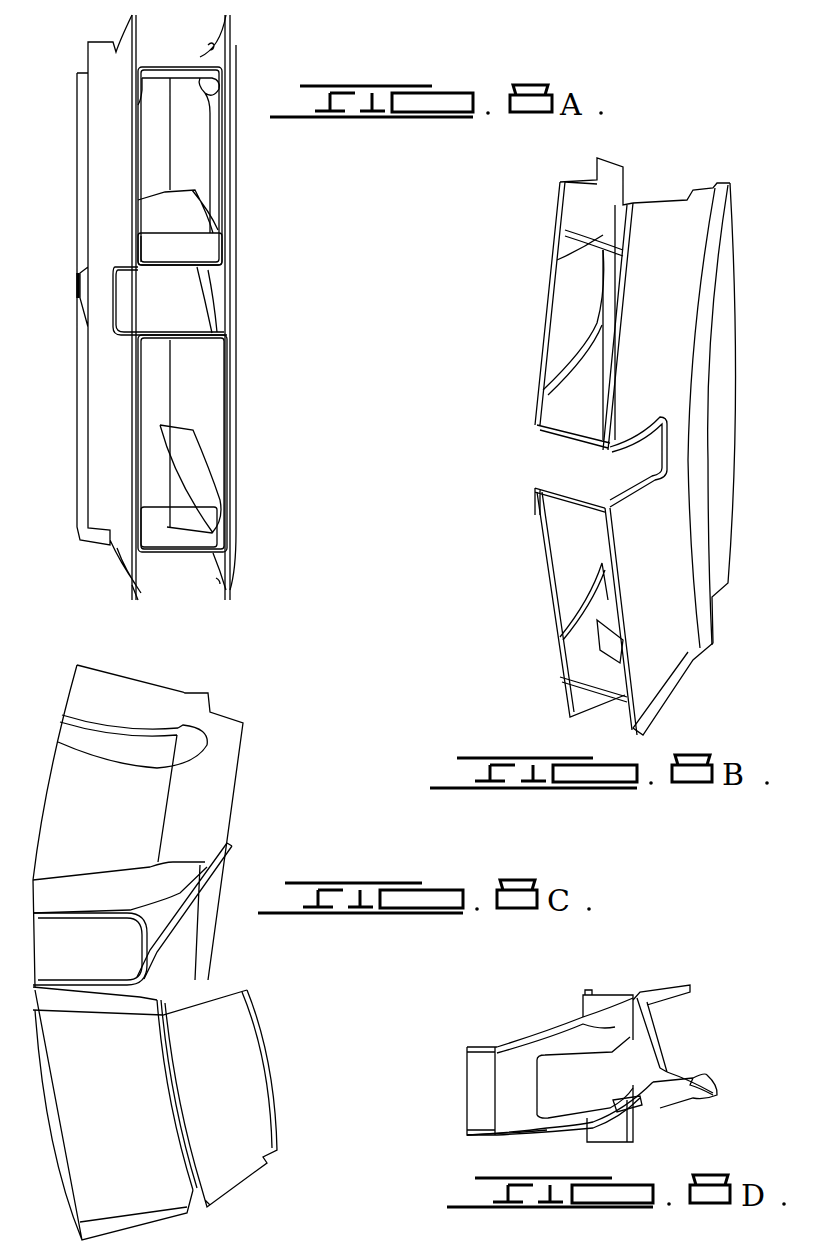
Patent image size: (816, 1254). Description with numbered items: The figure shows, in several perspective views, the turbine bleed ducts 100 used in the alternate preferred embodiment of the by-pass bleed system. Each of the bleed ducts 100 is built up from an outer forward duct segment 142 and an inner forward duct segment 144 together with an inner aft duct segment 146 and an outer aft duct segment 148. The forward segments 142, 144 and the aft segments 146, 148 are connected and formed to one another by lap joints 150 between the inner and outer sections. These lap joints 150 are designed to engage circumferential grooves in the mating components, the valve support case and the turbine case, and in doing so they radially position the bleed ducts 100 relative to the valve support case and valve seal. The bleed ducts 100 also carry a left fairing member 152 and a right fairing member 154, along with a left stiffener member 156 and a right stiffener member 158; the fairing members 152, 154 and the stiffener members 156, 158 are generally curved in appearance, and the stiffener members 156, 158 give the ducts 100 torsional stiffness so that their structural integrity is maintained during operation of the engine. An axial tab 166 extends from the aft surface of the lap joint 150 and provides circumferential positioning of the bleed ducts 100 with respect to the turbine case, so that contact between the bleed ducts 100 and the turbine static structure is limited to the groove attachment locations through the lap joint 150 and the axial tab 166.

In FIG. 8A, the bleed ducts 100 is at (256, 218).
In FIG. 8B, the bleed ducts 100 is at (526, 277).
In FIG. 8C, the bleed ducts 100 is at (272, 710).
In FIG. 8D, the bleed ducts 100 is at (470, 1020).
In FIG. 8D, the outer forward duct segment 142 is at (553, 1134).
In FIG. 8D, the inner forward duct segment 144 is at (655, 1108).
In FIG. 8D, the inner aft duct segment 146 is at (642, 1015).
In FIG. 8D, the outer aft duct segment 148 is at (540, 1038).
In FIG. 8A, the lap joints 150 is at (108, 152).
In FIG. 8C, the lap joints 150 is at (163, 1083).
In FIG. 8D, the lap joints 150 is at (608, 1005).
In FIG. 8B, the left fairing member 152 is at (570, 487).
In FIG. 8C, the left fairing member 152 is at (48, 982).
In FIG. 8B, the right fairing member 154 is at (555, 398).
In FIG. 8B, the left stiffener member 156 is at (583, 675).
In FIG. 8B, the right stiffener member 158 is at (563, 228).
In FIG. 8A, the axial tab 166 is at (77, 298).